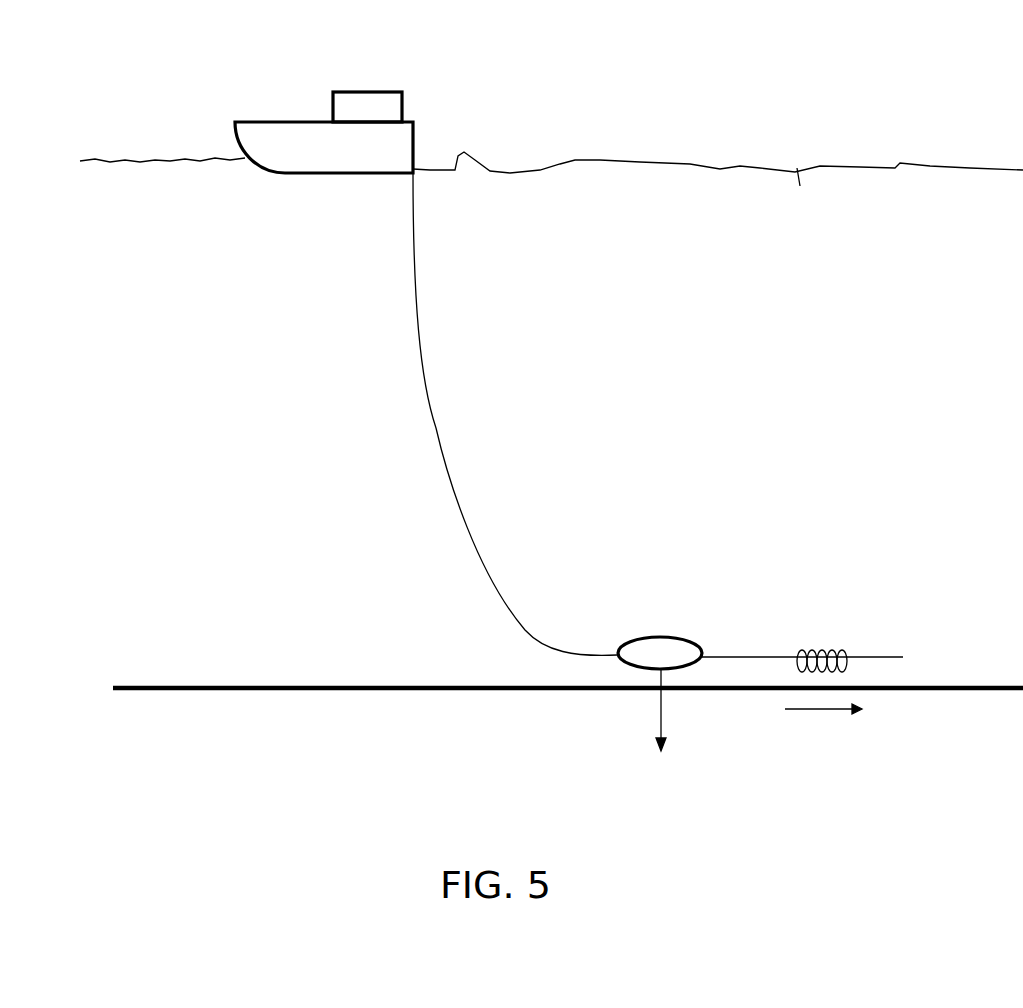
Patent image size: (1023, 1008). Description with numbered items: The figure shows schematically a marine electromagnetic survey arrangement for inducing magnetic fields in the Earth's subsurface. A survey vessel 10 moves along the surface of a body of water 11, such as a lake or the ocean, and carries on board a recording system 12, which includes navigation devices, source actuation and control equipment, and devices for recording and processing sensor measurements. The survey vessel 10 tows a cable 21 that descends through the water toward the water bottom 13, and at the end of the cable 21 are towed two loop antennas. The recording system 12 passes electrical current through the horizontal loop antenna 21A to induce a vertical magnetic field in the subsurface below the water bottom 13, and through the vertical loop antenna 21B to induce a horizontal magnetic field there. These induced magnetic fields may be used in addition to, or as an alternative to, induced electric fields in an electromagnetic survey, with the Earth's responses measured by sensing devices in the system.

The survey vessel 10 is at (275, 133).
The body of water 11 is at (692, 164).
The recording system 12 is at (377, 100).
The water bottom 13 is at (897, 685).
The cable 21 is at (432, 404).
The horizontal loop antenna 21A is at (660, 634).
The vertical loop antenna 21B is at (818, 653).